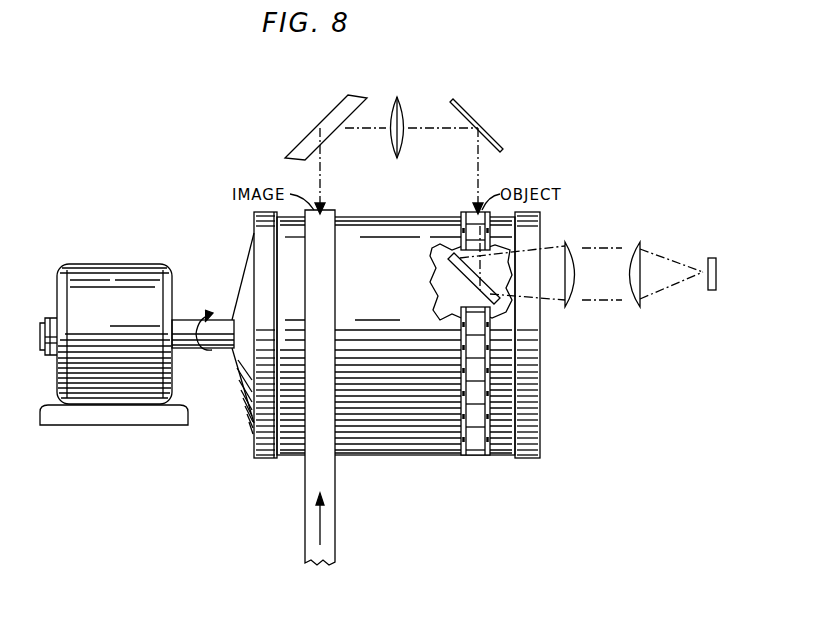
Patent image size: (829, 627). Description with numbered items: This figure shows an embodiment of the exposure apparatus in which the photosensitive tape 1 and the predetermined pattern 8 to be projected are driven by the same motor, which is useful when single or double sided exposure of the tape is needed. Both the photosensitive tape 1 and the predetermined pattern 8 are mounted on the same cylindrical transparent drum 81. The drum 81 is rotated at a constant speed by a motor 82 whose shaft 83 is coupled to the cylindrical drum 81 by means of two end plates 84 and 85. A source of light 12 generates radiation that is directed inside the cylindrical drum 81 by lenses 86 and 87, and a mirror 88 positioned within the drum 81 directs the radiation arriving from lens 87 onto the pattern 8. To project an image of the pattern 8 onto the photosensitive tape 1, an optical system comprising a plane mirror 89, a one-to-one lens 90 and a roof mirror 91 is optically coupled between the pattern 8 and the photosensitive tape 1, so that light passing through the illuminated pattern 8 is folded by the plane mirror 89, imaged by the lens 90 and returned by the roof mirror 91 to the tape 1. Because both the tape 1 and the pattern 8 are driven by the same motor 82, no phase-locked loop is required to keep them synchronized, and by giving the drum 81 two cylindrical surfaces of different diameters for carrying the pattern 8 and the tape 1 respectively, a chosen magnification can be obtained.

The motor 82 is at (122, 270).
The shaft 83 is at (222, 325).
The end plate 84 is at (250, 422).
The end plate 85 is at (543, 432).
The cylindrical transparent drum 81 is at (388, 443).
The predetermined pattern 8 is at (476, 402).
The photosensitive tape 1 is at (336, 511).
The mirror 88 is at (446, 277).
The lens 87 is at (570, 242).
The lens 86 is at (634, 242).
The source of light 12 is at (712, 258).
The plane mirror 89 is at (468, 108).
The 1:1 lens 90 is at (398, 100).
The roof mirror 91 is at (318, 120).